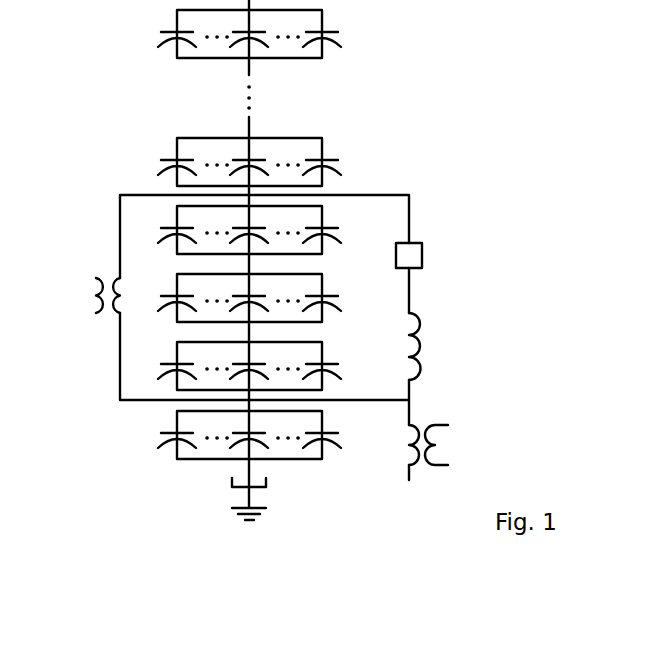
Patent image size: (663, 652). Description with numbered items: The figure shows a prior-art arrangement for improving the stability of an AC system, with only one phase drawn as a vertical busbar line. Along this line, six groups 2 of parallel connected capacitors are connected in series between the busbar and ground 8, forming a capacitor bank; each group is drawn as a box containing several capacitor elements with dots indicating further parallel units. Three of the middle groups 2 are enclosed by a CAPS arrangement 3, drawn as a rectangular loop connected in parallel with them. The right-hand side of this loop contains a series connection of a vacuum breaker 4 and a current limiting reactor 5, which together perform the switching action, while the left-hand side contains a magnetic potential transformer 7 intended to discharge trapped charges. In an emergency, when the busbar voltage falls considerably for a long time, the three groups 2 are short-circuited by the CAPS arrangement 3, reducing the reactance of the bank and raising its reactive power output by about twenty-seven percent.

The group of parallel connected capacitors 2 is at (270, 235).
The CAPS arrangement 3 is at (421, 207).
The vacuum breaker 4 is at (422, 256).
The current limiting reactor 5 is at (422, 347).
The magnetic potential transformer 7 is at (96, 295).
The ground 8 is at (258, 514).